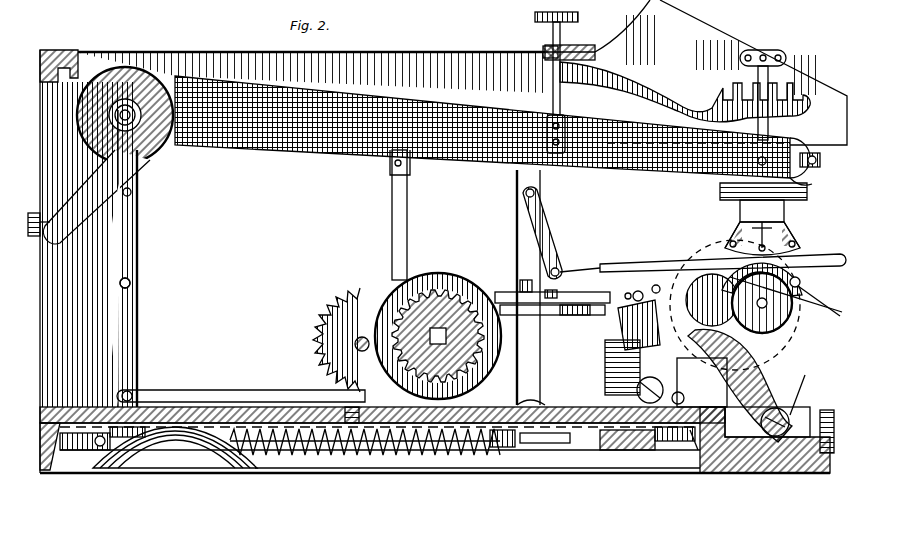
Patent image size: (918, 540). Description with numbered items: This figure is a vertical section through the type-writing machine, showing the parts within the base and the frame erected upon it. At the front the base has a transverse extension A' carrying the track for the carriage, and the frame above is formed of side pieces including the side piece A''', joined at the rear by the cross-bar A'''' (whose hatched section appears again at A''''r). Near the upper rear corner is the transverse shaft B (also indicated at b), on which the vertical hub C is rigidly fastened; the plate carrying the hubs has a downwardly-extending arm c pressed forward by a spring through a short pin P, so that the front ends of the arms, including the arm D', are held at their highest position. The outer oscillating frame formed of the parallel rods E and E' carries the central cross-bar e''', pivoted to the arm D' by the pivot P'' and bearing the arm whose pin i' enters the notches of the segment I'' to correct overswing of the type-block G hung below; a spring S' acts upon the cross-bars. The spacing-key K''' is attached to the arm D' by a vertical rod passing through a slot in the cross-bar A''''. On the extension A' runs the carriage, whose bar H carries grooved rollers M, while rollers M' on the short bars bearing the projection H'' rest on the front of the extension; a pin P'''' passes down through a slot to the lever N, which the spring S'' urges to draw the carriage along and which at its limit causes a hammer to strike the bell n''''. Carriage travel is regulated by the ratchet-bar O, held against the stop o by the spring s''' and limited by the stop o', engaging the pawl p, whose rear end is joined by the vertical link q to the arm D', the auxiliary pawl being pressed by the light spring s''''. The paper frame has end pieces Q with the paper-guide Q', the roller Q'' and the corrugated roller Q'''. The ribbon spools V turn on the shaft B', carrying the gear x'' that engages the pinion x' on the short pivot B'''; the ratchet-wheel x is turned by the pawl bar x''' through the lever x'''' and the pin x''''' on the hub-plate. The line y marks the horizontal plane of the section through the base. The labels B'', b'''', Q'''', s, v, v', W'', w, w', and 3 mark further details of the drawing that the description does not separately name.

The transverse extension A' is at (435, 449).
The side piece A''' is at (462, 72).
The cross-bar A'''' is at (60, 53).
The hatched block A''''r is at (569, 42).
The transverse shaft B is at (107, 115).
The wheel hub b is at (90, 134).
The shaft B' is at (438, 326).
The link B'' is at (552, 233).
The short pivot B''' is at (340, 324).
The stud b'''' is at (561, 281).
The vertical hub C is at (172, 158).
The downwardly-extending arm c is at (90, 258).
The arm D' is at (492, 125).
The rod E is at (780, 238).
The rod E' is at (822, 158).
The central cross-bar e''' is at (822, 177).
The type-block G is at (740, 232).
The bar H is at (88, 261).
The projection H'' is at (767, 455).
The segment I'' is at (685, 92).
The pin i' is at (760, 95).
The spacing-key K''' is at (534, 82).
The grooved roller M is at (601, 367).
The roller M' is at (828, 418).
The lever N is at (547, 451).
The bell n'''' is at (175, 447).
The letter-spacing ratchet-bar O is at (639, 314).
The stop o is at (580, 325).
The stop o' is at (657, 282).
The short pin P is at (49, 241).
The pivot P'' is at (744, 158).
The pin P'''' is at (685, 448).
The principal pawl p is at (552, 303).
The end piece Q is at (784, 405).
The paper-guide Q' is at (748, 385).
The roller Q'' is at (780, 303).
The corrugated roller Q''' is at (731, 304).
The rod Q'''' is at (816, 391).
The vertical link q is at (408, 206).
The spring S' is at (329, 450).
The spring S'' is at (365, 464).
The screw s is at (102, 439).
The spring s''' is at (675, 390).
The light spring s'''' is at (702, 382).
The spool V is at (520, 287).
The cup bracket v is at (752, 198).
The cylinder v' is at (647, 437).
The rod W'' is at (703, 255).
The screw w is at (504, 450).
The roller w' is at (786, 295).
The ratchet-wheel x is at (326, 346).
The pinion x' is at (627, 286).
The gear x'' is at (438, 313).
The bar x''' is at (241, 386).
The lever x'''' is at (150, 294).
The pin x''''' is at (154, 195).
The section line y is at (60, 428).
The bolt 3 is at (33, 238).